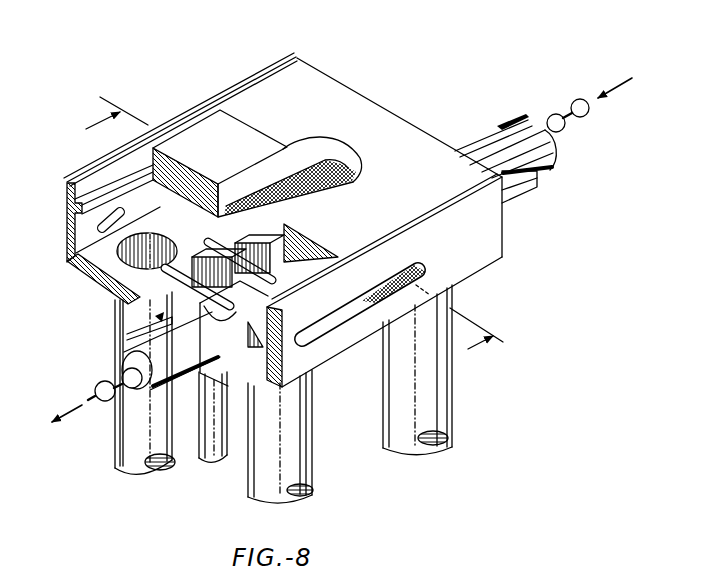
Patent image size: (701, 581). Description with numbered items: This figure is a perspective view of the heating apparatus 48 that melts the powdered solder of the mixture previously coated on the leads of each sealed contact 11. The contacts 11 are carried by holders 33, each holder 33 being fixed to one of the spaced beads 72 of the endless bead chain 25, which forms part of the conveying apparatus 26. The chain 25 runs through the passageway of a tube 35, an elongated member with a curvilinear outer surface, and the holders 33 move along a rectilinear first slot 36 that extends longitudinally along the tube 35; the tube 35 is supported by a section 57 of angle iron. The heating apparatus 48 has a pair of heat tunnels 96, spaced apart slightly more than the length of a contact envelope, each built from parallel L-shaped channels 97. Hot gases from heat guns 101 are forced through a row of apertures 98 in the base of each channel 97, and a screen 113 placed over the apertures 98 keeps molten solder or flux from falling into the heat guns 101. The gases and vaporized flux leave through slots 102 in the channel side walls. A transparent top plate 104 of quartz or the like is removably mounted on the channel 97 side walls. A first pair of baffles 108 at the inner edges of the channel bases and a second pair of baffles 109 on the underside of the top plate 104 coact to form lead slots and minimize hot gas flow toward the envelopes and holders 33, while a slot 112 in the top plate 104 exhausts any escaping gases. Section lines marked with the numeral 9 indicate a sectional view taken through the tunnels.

The section line 9- 9 is at (285, 229).
The contact 11 is at (268, 292).
The endless bead chain 25 is at (564, 125).
The conveying apparatus 26 is at (492, 120).
The holder 33 is at (160, 318).
The tube 35 is at (548, 171).
The first slot 36 is at (517, 112).
The heating apparatus 48 is at (242, 70).
The section of angle iron 57 is at (517, 198).
The bead 72 is at (571, 107).
The heat tunnel 96 is at (312, 283).
The L-shaped channel 97 is at (90, 233).
The aperture 98 is at (118, 253).
The heat gun 101 is at (118, 432).
The slot 102 is at (98, 231).
The top plate 104 is at (340, 104).
The first pair of baffles 108 is at (143, 300).
The second pair of baffles 109 is at (210, 241).
The slot 112 is at (340, 173).
The screen 113 is at (257, 190).